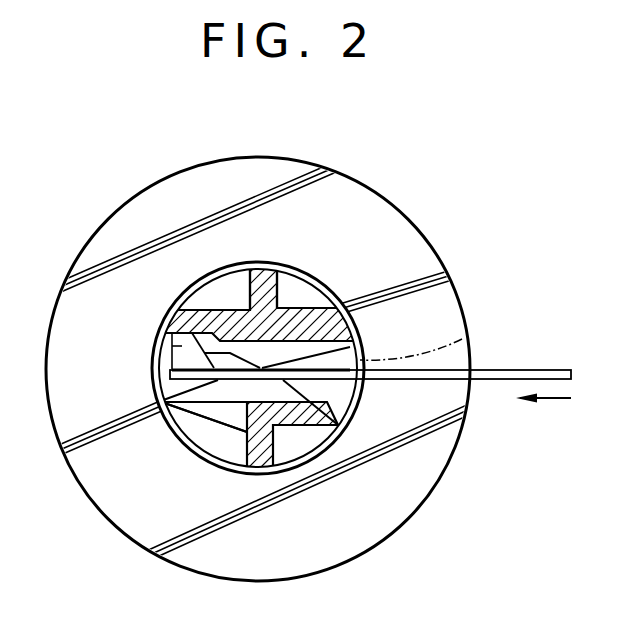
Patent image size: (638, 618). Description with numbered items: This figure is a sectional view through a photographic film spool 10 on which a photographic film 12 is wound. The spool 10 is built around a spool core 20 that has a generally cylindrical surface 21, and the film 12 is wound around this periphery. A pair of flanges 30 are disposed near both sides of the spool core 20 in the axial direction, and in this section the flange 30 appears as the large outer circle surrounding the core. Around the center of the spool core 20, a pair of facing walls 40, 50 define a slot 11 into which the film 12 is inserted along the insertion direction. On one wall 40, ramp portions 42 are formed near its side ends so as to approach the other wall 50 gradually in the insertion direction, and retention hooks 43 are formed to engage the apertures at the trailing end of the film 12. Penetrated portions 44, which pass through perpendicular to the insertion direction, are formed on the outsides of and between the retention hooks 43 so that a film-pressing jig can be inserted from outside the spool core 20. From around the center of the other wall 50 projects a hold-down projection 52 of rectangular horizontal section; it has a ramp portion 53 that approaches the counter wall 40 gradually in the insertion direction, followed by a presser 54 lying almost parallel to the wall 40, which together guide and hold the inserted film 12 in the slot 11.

The photographic film spool 10 is at (247, 156).
The slot 11 is at (462, 339).
The photographic film 12 is at (538, 370).
The spool core 20 is at (282, 282).
The cylindrical surface 21 is at (270, 268).
The flange 30 is at (444, 266).
The wall 40 is at (247, 433).
The ramp portion 42 is at (302, 393).
The retention hook 43 is at (183, 311).
The penetrated portion 44 is at (200, 413).
The wall 50 is at (221, 308).
The hold-down projection 52 is at (168, 350).
The ramp portion 53 is at (293, 350).
The presser 54 is at (186, 368).